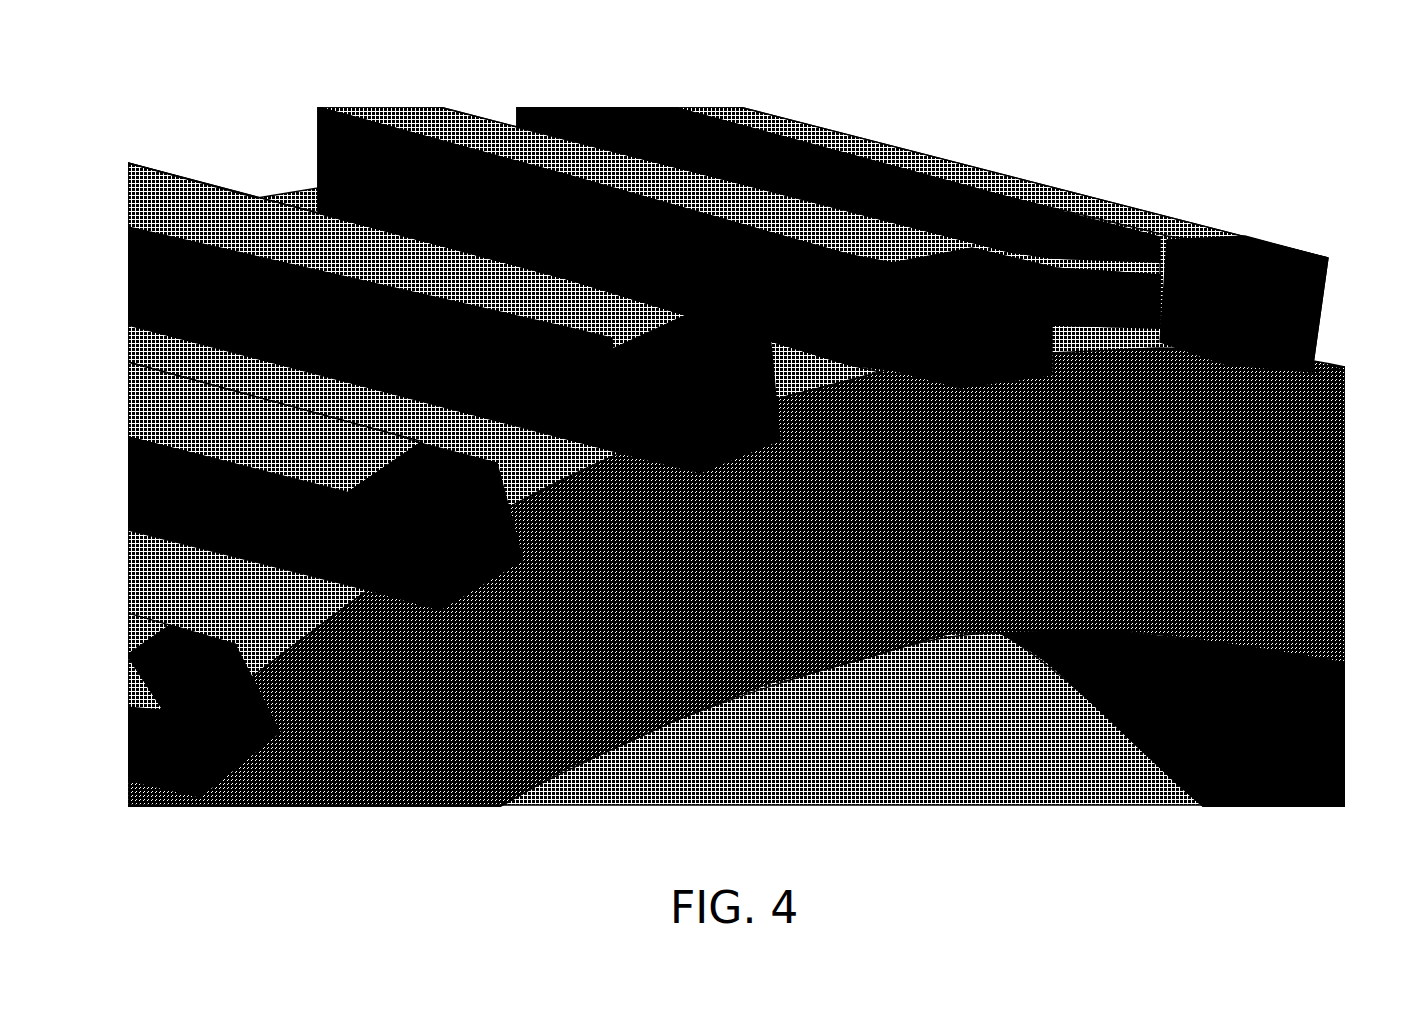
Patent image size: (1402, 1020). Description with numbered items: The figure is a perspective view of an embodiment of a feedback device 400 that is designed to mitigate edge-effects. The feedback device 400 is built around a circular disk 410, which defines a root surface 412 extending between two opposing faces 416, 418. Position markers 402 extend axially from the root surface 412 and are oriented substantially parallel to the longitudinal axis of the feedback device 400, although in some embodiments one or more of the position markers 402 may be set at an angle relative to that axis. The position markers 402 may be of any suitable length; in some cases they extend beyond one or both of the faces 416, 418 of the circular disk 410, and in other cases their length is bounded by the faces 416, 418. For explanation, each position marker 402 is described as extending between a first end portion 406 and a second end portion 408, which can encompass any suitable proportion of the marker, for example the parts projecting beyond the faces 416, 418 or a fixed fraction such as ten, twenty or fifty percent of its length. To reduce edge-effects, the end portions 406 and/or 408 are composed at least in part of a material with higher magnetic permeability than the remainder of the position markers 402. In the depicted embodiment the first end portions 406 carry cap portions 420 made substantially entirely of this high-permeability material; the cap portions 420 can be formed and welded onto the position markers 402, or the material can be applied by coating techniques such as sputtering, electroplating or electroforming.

The feedback device 400 is at (739, 405).
The position markers 402 is at (804, 128).
The first end portion 406 is at (1084, 284).
The second end portion 408 is at (298, 90).
The circular disk 410 is at (610, 713).
The root surface 412 is at (150, 352).
The face 416 is at (960, 633).
The face 418 is at (238, 162).
The cap portions 420 is at (515, 552).